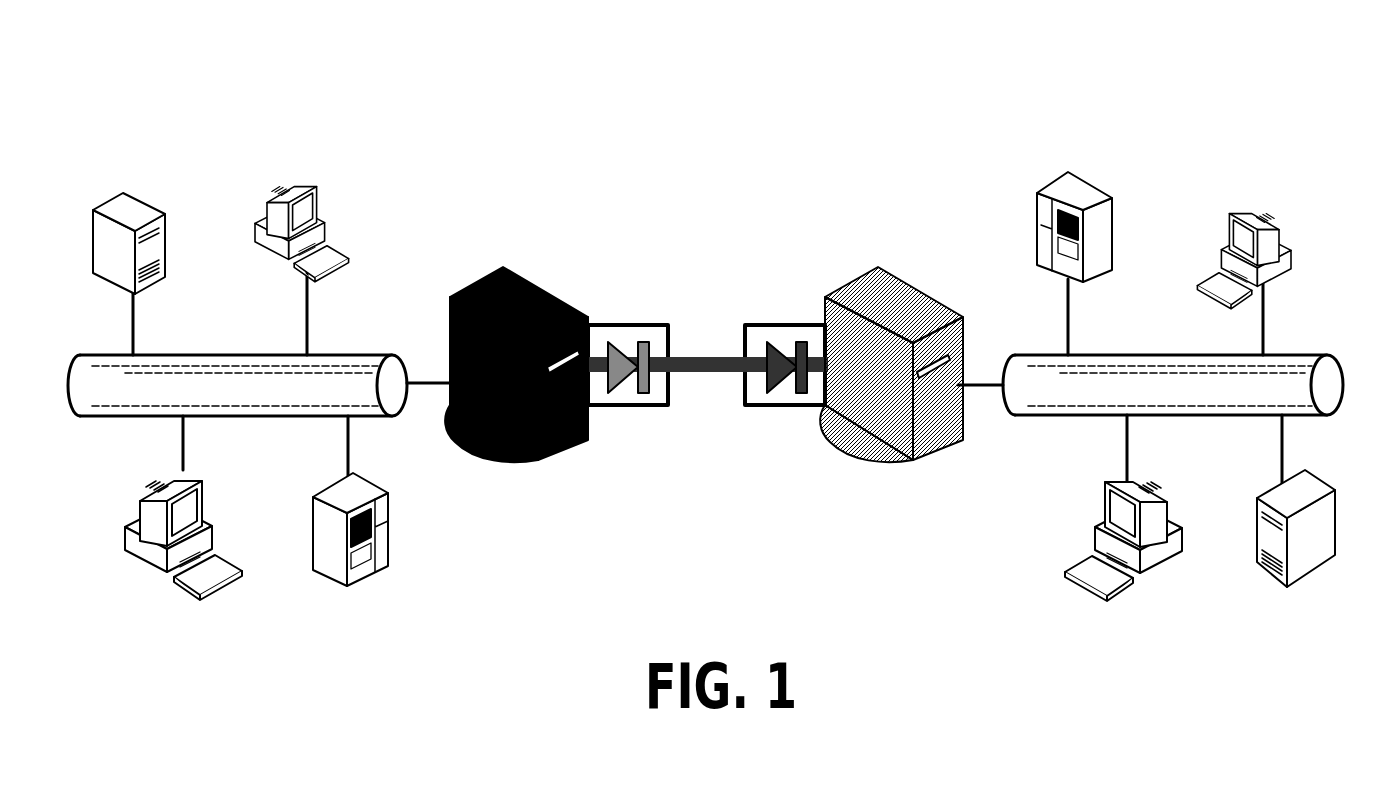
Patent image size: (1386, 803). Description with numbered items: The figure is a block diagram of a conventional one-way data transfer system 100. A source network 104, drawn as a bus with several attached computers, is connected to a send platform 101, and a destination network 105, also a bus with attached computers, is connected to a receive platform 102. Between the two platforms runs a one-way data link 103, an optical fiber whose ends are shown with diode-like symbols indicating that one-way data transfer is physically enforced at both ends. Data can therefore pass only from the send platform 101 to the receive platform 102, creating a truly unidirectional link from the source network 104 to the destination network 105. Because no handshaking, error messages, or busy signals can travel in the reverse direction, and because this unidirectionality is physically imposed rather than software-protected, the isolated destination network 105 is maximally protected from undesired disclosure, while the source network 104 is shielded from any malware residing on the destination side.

The one-way data transfer system 100 is at (705, 317).
The send platform 101 is at (526, 278).
The receive platform 102 is at (872, 282).
The one-way data link 103 is at (706, 373).
The source network 104 is at (216, 378).
The destination network 105 is at (1135, 378).